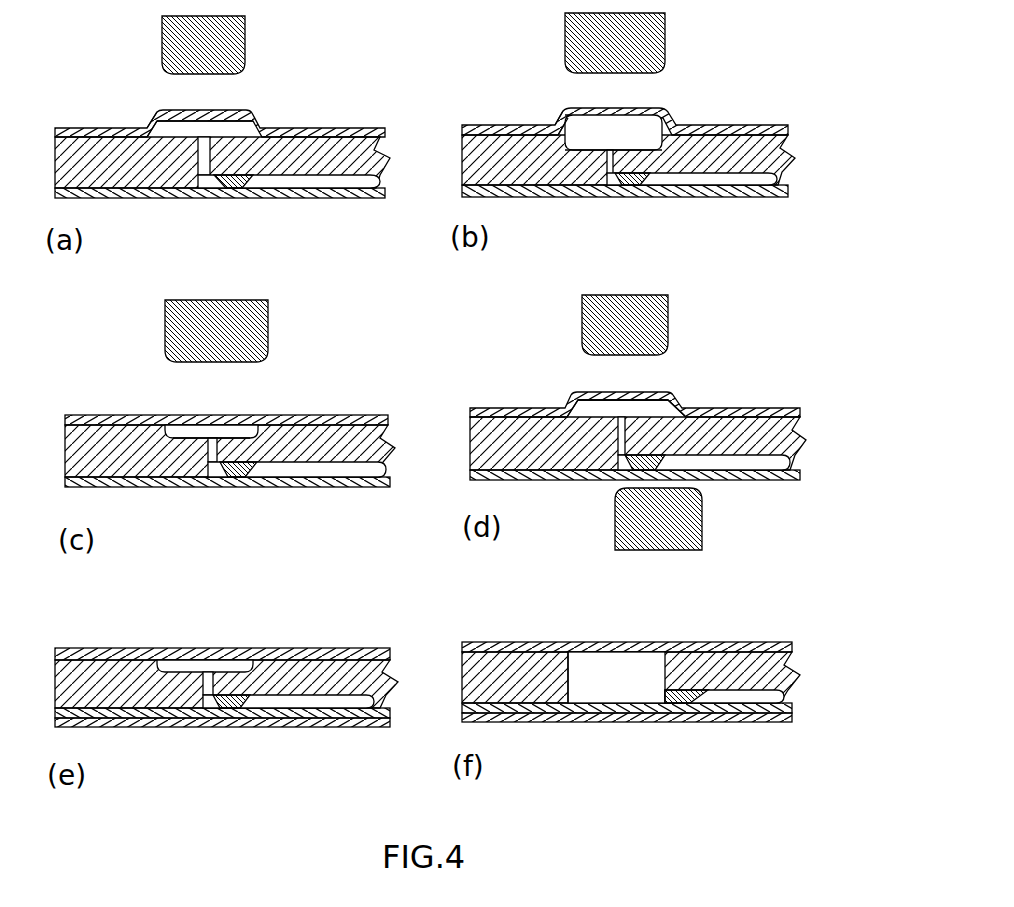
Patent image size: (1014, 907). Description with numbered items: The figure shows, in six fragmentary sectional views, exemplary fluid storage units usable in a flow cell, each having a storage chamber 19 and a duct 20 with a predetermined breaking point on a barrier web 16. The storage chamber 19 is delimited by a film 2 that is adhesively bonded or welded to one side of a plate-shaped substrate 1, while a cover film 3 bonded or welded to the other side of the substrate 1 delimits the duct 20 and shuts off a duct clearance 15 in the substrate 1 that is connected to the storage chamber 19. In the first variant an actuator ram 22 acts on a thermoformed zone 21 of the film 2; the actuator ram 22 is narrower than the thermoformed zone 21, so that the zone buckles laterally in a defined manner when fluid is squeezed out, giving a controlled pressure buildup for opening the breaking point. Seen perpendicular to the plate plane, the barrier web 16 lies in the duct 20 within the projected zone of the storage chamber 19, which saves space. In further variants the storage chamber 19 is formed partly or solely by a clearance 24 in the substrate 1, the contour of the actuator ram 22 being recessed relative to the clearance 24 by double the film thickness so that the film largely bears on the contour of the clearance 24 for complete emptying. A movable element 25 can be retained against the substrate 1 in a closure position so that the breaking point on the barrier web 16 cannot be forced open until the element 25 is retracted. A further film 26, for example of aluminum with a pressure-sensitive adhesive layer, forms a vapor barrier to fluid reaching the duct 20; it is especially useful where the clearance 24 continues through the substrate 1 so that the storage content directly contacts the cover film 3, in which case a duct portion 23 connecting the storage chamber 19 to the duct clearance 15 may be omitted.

The plate-shaped substrate 1 is at (60, 155).
The film 2 is at (355, 131).
The cover film 3 is at (262, 198).
The duct clearance 15 is at (332, 188).
The barrier web 16 is at (232, 182).
The storage chamber 19 is at (232, 130).
The duct 20 is at (295, 187).
The thermoformed zone 21 is at (150, 118).
The actuator ram 22 is at (245, 42).
The duct portion 23 is at (165, 182).
The clearance 24 is at (578, 150).
The movable element 25 is at (615, 522).
The further film 26 is at (275, 730).